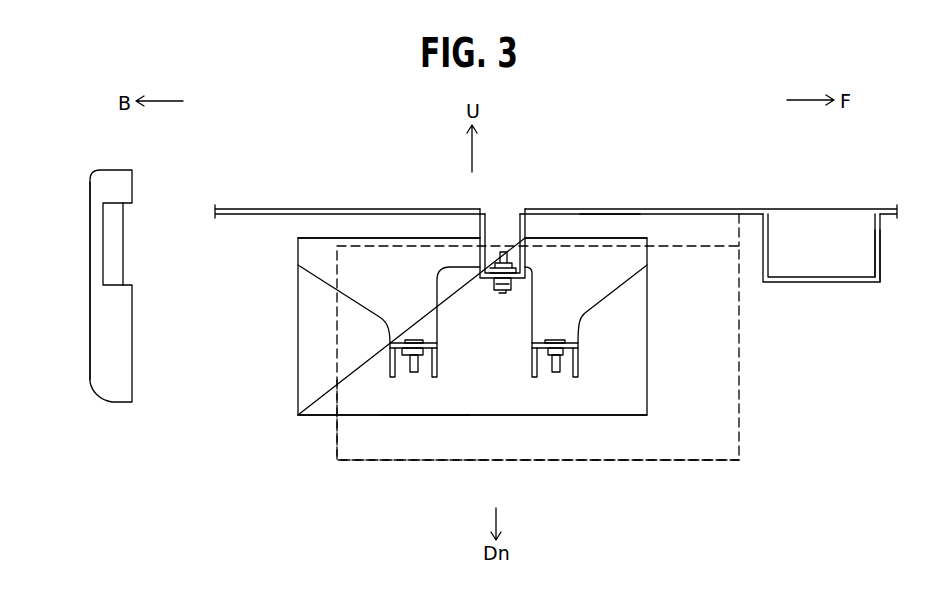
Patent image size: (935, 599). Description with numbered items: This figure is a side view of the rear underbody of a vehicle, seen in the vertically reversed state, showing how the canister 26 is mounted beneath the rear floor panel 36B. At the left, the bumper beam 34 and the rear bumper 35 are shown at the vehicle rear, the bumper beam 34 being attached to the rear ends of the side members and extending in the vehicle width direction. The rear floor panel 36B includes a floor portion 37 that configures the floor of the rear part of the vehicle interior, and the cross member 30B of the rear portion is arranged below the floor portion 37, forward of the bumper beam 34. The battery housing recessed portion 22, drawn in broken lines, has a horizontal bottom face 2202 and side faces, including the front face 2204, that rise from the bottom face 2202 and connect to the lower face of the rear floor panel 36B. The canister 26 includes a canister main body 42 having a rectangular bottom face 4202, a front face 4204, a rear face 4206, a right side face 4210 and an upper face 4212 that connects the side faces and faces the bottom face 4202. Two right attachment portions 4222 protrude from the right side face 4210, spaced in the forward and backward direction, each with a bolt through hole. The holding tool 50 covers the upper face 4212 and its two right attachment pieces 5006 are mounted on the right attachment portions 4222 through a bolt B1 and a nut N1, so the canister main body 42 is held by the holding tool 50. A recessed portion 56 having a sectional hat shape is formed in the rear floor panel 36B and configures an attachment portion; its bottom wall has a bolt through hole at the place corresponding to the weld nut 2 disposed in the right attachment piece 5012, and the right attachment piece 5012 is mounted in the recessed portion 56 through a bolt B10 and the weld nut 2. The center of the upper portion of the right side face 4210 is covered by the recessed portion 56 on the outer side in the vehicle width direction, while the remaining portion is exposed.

The weld nut 2 is at (513, 244).
The battery housing recessed portion 22 is at (452, 463).
The bottom face 2202 is at (527, 463).
The front face 2204 is at (739, 310).
The canister 26 is at (609, 224).
The cross member 30B is at (883, 283).
The bumper beam 34 is at (128, 228).
The rear bumper 35 is at (90, 227).
The rear floor panel 36B is at (698, 210).
The floor portion 37 is at (675, 208).
The canister main body 42 is at (542, 400).
The bottom face 4202 is at (500, 416).
The front face 4204 is at (647, 363).
The rear face 4206 is at (300, 318).
The right side face 4210 is at (300, 358).
The upper face 4212 is at (567, 238).
The right attachment portion 4222 is at (393, 369).
The holding tool 50 is at (416, 435).
The right attachment piece 5006 is at (407, 342).
The right attachment piece 5012 is at (517, 290).
The recessed portion 56 is at (498, 246).
The bolt B1 is at (416, 340).
The bolt B10 is at (492, 285).
The nut N1 is at (402, 370).